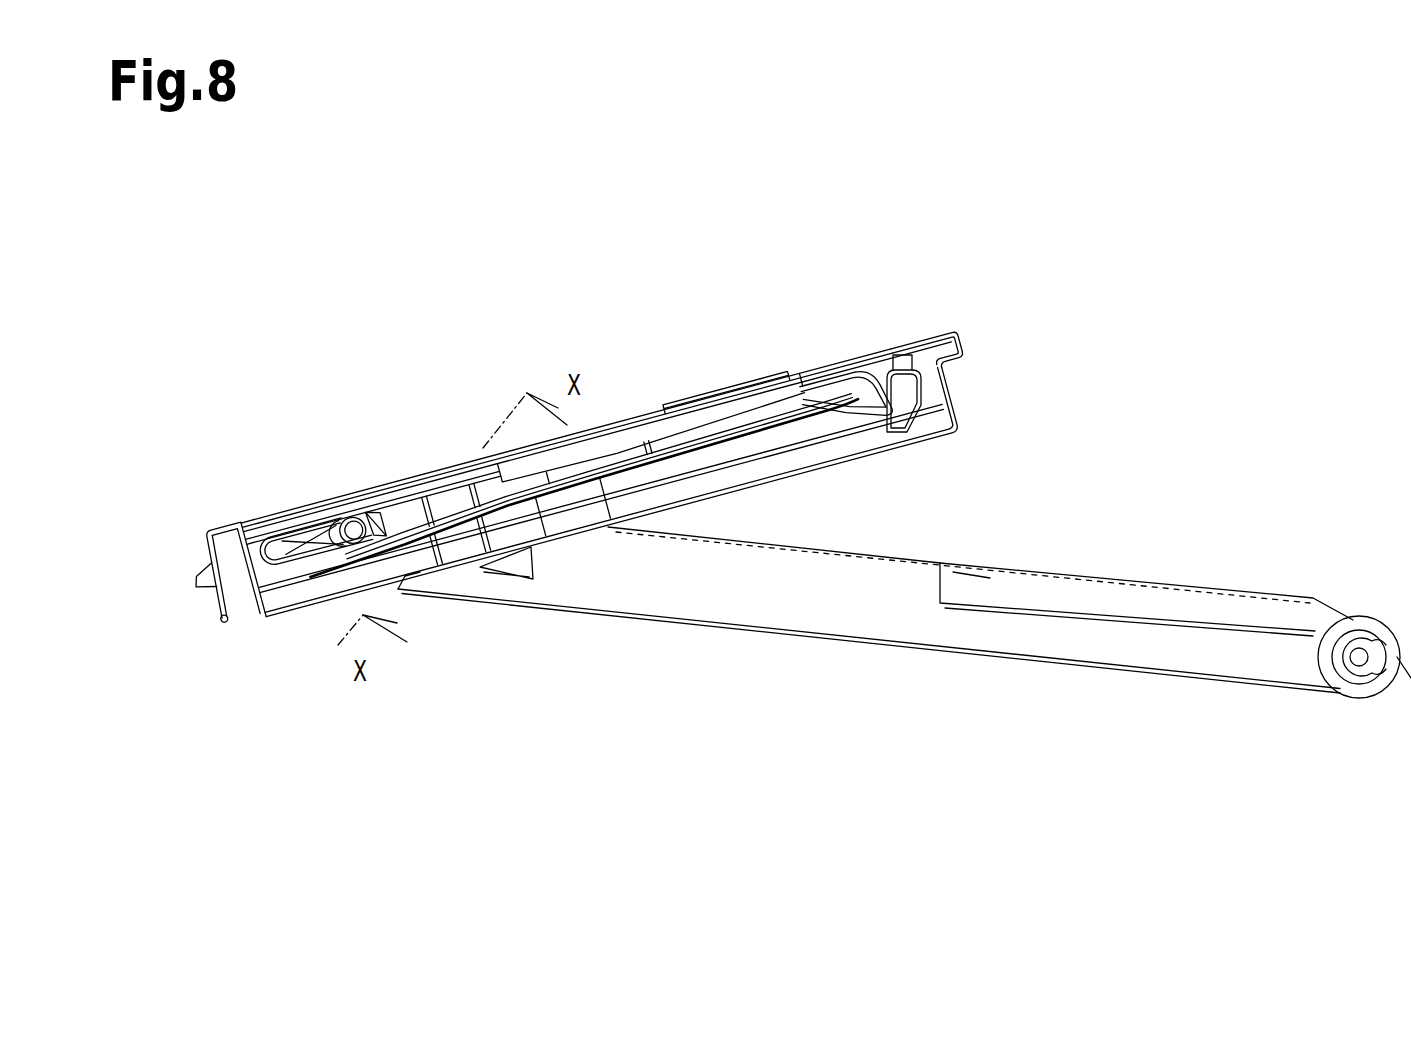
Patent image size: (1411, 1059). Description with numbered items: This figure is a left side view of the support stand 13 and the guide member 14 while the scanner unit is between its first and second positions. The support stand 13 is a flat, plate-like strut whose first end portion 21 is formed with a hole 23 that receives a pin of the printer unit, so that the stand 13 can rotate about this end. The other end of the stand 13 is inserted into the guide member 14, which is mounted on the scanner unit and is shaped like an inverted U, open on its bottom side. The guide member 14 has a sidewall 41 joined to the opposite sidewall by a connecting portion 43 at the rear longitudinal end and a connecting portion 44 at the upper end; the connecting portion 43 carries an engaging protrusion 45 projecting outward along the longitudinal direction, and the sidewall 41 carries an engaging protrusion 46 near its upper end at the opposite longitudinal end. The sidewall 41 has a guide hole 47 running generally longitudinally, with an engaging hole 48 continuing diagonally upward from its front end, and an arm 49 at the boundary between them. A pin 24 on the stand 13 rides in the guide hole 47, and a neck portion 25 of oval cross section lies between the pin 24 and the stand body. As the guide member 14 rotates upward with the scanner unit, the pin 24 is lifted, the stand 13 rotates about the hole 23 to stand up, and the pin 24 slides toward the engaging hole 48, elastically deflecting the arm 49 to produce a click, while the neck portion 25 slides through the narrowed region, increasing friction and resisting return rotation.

The support stand 13 is at (846, 695).
The guide member 14 is at (970, 467).
The first end portion 21 is at (1410, 718).
The hole 23 is at (1366, 644).
The pin 24 is at (352, 528).
The neck portion 25 is at (380, 522).
The sidewall 41 is at (290, 595).
The connecting portion 43 is at (259, 605).
The connecting portion 44 is at (735, 388).
The engaging protrusion 45 is at (207, 573).
The engaging protrusion 46 is at (963, 349).
The guide hole 47 is at (602, 460).
The engaging hole 48 is at (903, 385).
The arm 49 is at (858, 420).